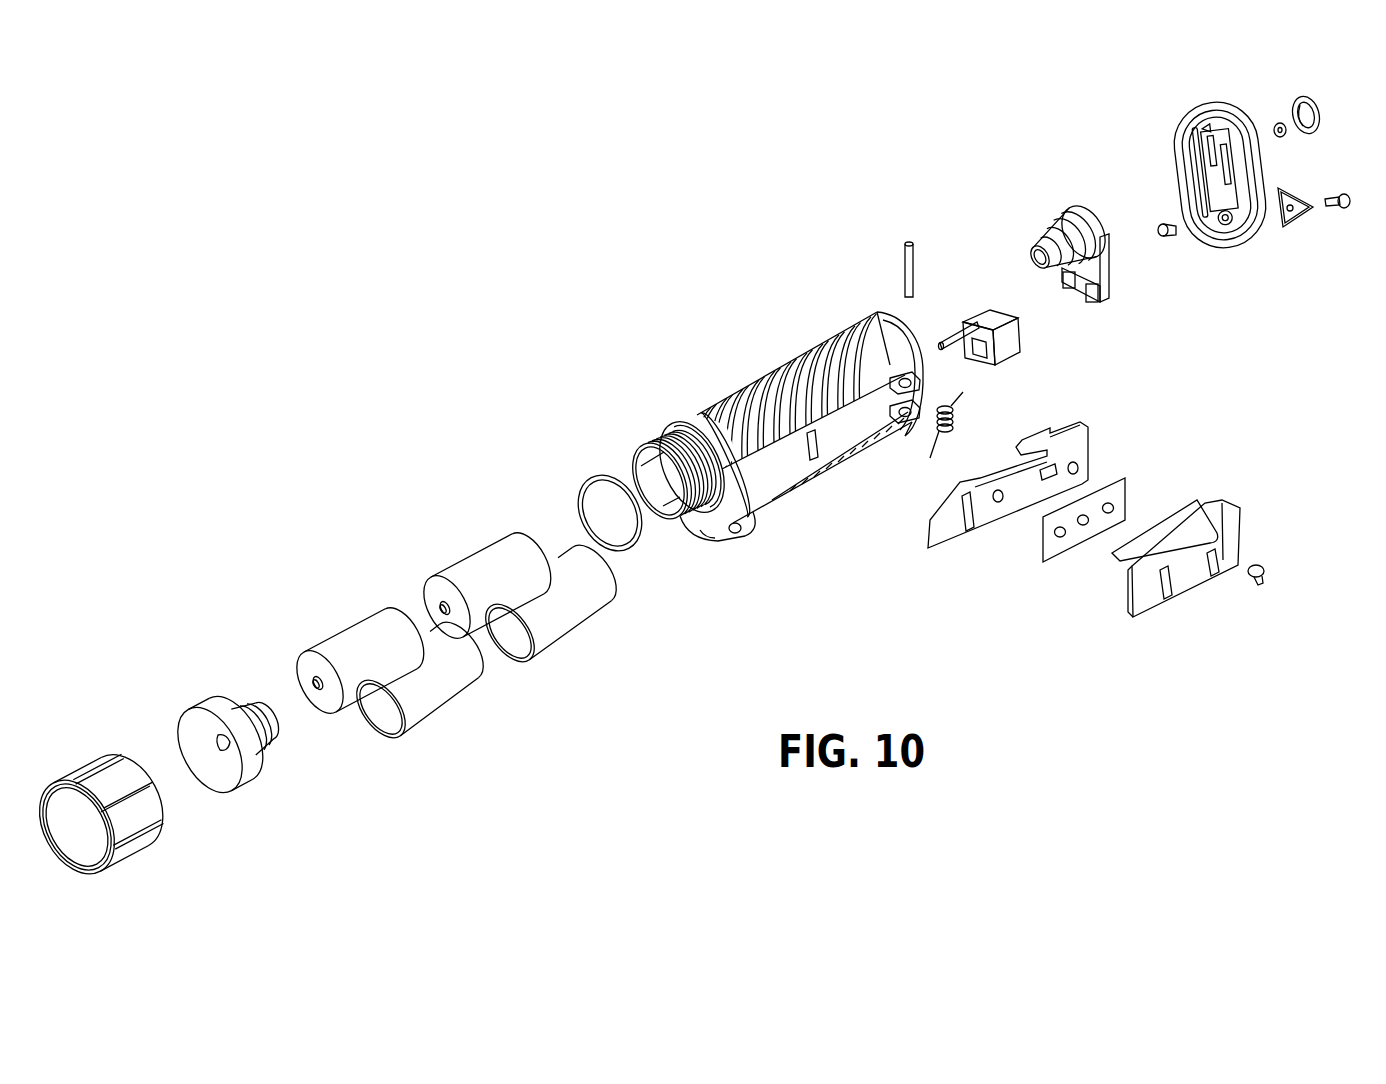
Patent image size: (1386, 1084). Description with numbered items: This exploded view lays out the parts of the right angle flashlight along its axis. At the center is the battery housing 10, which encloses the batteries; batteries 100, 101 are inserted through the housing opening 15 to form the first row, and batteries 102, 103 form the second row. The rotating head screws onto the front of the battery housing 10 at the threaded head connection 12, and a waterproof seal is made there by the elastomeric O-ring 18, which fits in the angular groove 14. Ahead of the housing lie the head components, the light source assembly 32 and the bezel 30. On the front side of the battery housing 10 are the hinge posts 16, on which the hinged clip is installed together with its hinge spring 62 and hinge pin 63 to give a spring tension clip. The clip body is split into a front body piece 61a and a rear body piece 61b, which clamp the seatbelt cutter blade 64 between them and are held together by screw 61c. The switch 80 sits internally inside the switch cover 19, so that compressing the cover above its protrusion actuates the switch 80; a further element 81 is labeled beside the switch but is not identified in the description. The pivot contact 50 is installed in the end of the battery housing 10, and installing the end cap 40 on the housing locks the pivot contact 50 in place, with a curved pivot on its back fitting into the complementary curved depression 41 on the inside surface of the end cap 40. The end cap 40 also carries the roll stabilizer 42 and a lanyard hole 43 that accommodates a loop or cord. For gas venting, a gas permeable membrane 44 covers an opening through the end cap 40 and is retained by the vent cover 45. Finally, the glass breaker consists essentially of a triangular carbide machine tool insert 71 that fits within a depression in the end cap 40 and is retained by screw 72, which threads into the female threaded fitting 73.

The battery housing 10 is at (795, 363).
The threaded head connection 12 is at (652, 440).
The angular groove 14 is at (668, 424).
The housing opening 15 is at (650, 480).
The hinge posts 16 is at (907, 425).
The elastomeric O-ring 18 is at (630, 550).
The switch cover 19 is at (745, 535).
The bezel 30 is at (140, 827).
The light source assembly 32 is at (245, 765).
The end cap 40 is at (1238, 117).
The curved depression 41 is at (1220, 172).
The roll stabilizer 42 is at (1185, 157).
The lanyard hole 43 is at (1188, 142).
The gas permeable membrane 44 is at (1284, 137).
The vent cover 45 is at (1320, 108).
The pivot contact 50 is at (1113, 277).
The front body piece 61a is at (1180, 583).
The rear body piece 61b is at (993, 513).
The screw 61c is at (1257, 587).
The hinge spring 62 is at (955, 415).
The hinge pin 63 is at (900, 262).
The blade 64 is at (1077, 533).
The triangular carbide machine tool insert 71 is at (1284, 229).
The screw 72 is at (1332, 209).
The female threaded fitting 73 is at (1166, 237).
The switch 80 is at (1020, 343).
The switch lever 81 is at (953, 350).
The battery 100 is at (557, 617).
The battery 101 is at (427, 700).
The battery 102 is at (493, 560).
The battery 103 is at (368, 637).